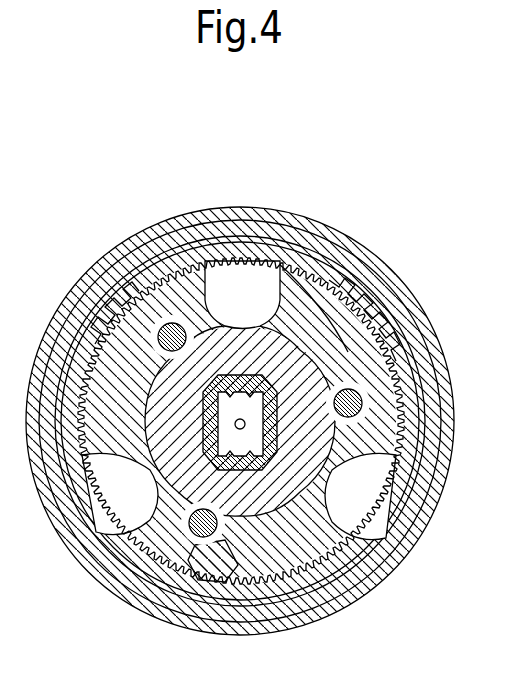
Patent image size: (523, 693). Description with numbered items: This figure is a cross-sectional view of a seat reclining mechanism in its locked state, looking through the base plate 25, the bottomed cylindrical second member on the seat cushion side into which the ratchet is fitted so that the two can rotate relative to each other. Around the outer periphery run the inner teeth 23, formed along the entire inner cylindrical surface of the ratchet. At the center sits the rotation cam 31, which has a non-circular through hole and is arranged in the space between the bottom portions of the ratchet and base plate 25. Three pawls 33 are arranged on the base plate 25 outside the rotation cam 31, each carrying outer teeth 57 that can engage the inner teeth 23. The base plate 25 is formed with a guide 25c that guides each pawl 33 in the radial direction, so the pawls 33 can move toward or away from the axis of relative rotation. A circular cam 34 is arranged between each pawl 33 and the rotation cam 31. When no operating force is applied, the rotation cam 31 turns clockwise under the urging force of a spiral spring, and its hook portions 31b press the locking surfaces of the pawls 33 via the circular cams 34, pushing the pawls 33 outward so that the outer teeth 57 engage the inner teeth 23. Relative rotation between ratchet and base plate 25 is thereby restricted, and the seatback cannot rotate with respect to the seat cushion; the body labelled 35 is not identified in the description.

The inner teeth 23 is at (74, 545).
The base plate 25 is at (452, 414).
The guide 25c is at (316, 290).
The rotation cam 31 is at (233, 352).
The hook portions 31b is at (135, 285).
The pawls 33 is at (74, 304).
The circular cam 34 is at (163, 323).
The carrier body 35 is at (290, 587).
The outer teeth 57 is at (252, 578).